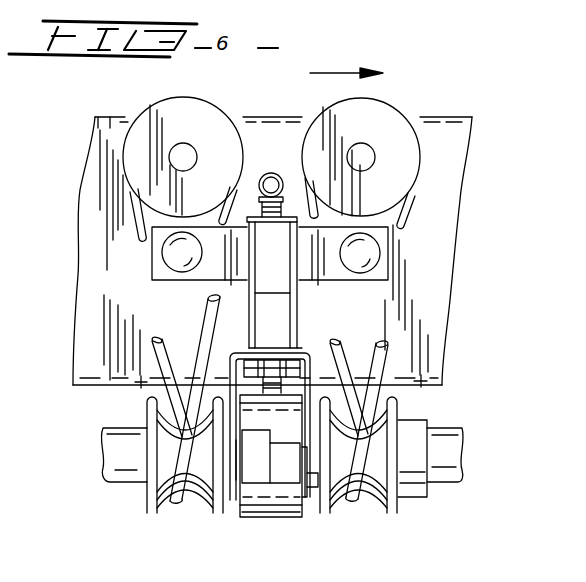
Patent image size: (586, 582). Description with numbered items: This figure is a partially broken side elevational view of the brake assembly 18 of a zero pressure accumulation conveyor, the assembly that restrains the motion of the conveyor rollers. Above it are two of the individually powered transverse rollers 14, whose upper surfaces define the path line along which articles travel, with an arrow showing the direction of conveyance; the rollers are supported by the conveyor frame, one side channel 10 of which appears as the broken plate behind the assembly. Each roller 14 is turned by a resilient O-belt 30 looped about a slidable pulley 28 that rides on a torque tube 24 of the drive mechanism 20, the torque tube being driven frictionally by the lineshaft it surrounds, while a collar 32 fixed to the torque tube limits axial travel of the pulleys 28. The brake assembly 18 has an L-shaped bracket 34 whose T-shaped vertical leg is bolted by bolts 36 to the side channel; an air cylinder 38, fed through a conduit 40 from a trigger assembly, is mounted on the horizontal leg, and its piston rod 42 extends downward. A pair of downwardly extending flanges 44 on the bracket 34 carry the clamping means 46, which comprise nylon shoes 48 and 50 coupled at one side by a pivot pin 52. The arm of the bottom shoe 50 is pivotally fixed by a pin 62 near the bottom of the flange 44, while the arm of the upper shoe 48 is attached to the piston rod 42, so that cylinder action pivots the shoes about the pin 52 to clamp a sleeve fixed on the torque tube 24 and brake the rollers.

The side channel 10 is at (262, 117).
The transverse roller 14 is at (190, 107).
The brake assembly 18 is at (276, 520).
The drive mechanism 20 is at (428, 503).
The torque tube 24 is at (118, 486).
The slidable pulley 28 is at (158, 513).
The resilient belt 30 is at (208, 297).
The collar 32 is at (420, 420).
The L-shaped bracket 34 is at (302, 304).
The bolt 36 is at (184, 252).
The air cylinder 38 is at (272, 282).
The conduit 40 is at (281, 174).
The piston rod 42 is at (282, 384).
The downwardly extending flange 44 is at (312, 382).
The clamping means 46 is at (258, 517).
The upper shoe 48 is at (285, 453).
The bottom shoe 50 is at (255, 457).
The pivot pin 52 is at (340, 450).
The pin 62 is at (231, 462).